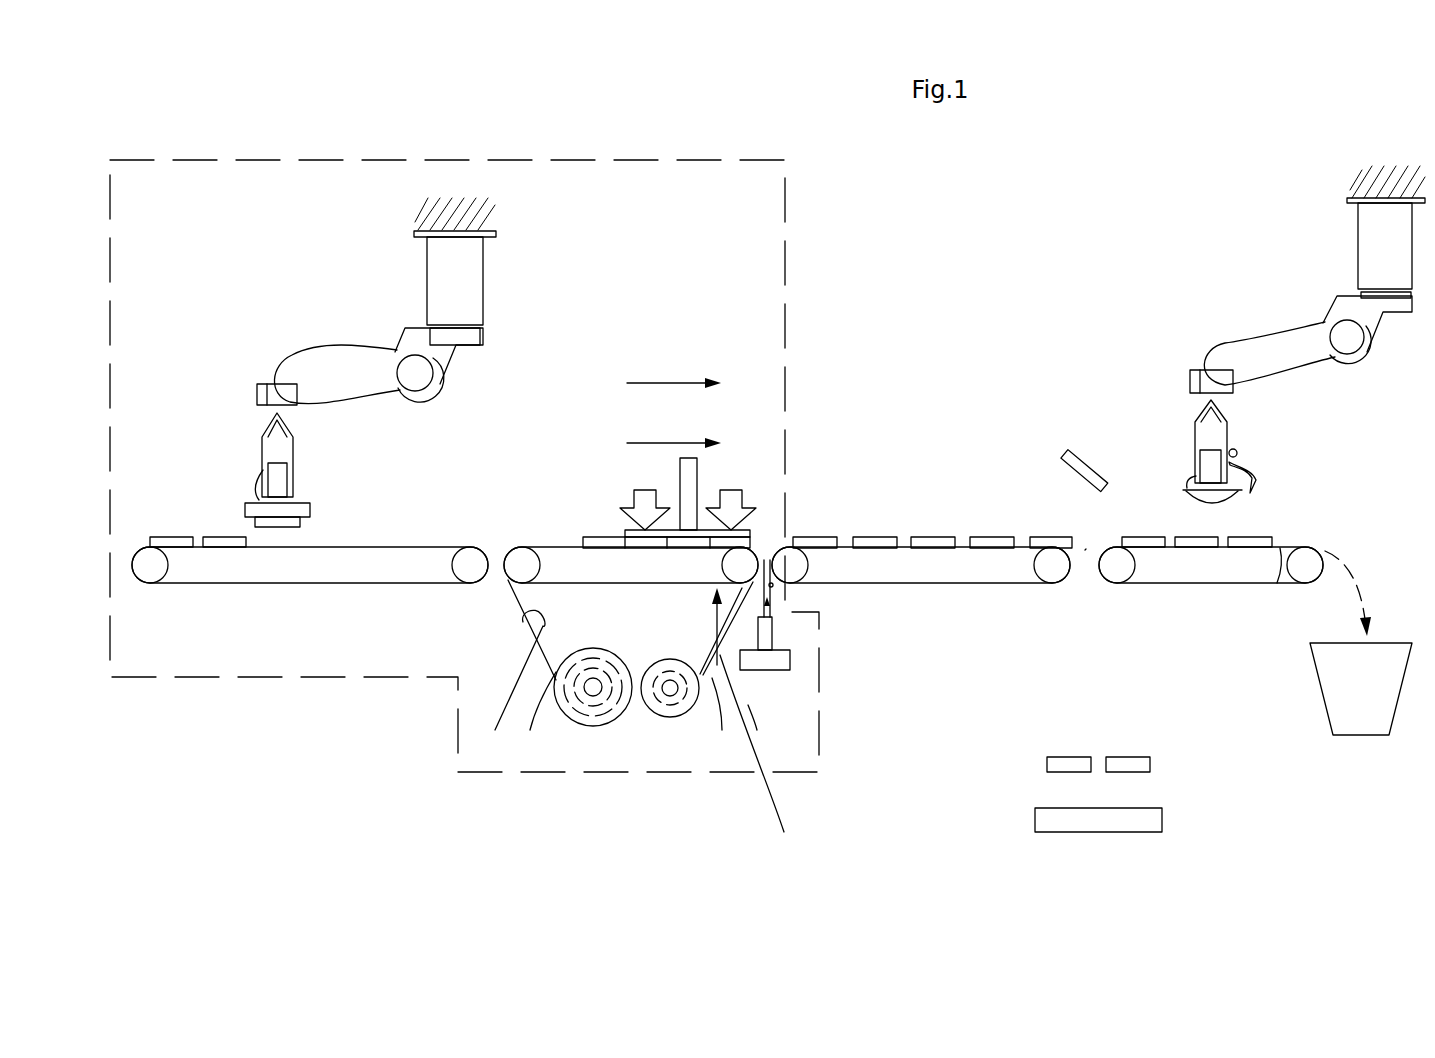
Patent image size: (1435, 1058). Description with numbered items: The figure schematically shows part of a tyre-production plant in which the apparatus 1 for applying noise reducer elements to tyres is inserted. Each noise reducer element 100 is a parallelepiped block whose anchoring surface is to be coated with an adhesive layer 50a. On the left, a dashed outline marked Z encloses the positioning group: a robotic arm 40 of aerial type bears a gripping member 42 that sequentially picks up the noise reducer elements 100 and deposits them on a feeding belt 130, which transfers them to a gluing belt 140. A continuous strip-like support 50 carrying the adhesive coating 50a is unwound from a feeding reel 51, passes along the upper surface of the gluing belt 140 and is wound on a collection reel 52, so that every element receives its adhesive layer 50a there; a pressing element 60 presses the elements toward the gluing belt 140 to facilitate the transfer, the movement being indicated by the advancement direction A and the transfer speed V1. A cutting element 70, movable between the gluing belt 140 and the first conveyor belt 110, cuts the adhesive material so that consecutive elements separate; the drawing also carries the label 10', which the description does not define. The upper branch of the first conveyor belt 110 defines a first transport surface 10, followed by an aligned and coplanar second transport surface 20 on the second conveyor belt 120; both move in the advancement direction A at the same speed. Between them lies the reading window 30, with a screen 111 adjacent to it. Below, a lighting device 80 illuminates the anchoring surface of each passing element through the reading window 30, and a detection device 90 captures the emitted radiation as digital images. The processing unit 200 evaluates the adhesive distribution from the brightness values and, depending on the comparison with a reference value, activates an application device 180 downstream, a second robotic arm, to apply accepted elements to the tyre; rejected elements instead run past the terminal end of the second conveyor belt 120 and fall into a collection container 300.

The apparatus 1 is at (1090, 270).
The zone Z is at (640, 161).
The first transport surface 10 is at (921, 601).
The cut web piece 10' is at (764, 760).
The second transport surface 20 is at (1277, 583).
The reading window 30 is at (1085, 550).
The robotic arm 40 is at (367, 291).
The gripping member 42 is at (275, 482).
The continuous strip-like support 50 is at (543, 626).
The adhesive layer 50a is at (570, 546).
The feeding reel 51 is at (605, 700).
The collection reel 52 is at (668, 705).
The pressing element 60 is at (700, 471).
The cutting element 70 is at (767, 555).
The lighting device 80 is at (1067, 773).
The detection device 90 is at (1127, 773).
The noise reducer element 100 is at (225, 537).
The first conveyor belt 110 is at (1000, 585).
The screen 111 is at (1072, 472).
The second conveyor belt 120 is at (1283, 588).
The feeding belt 130 is at (356, 568).
The gluing belt 140 is at (552, 567).
The application device 180 is at (1321, 258).
The processing unit 200 is at (1105, 833).
The collection container 300 is at (1326, 708).
The transfer speed V1 is at (674, 371).
The advancement direction A is at (672, 442).